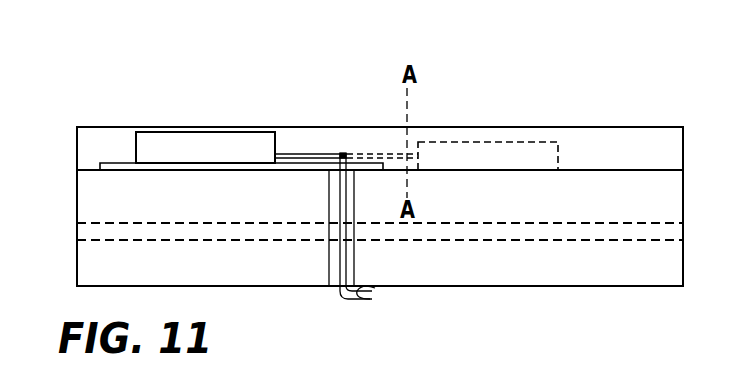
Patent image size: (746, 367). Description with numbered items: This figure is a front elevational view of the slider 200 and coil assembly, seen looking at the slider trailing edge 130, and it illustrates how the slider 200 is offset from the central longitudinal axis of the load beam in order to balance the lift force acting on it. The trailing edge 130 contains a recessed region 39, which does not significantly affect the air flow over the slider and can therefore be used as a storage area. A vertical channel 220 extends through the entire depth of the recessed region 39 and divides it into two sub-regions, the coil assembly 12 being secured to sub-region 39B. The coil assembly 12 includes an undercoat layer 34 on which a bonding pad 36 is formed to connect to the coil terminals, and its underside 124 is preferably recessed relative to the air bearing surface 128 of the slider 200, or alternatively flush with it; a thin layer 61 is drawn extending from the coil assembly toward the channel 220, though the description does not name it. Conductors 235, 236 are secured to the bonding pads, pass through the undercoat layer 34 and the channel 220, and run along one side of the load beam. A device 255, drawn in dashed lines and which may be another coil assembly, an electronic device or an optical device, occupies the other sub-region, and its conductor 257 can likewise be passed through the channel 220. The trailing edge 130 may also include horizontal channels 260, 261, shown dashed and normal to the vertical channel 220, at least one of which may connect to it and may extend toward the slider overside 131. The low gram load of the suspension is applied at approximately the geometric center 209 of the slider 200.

The slider 200 is at (352, 31).
The sub-region 39B is at (110, 128).
The coil assembly 12 is at (177, 112).
The underside of the coil assembly 124 is at (233, 131).
The undercoat layer 34 is at (120, 163).
The recessed region 39 is at (90, 168).
The lead 61 is at (301, 154).
The bonding pad 36 is at (341, 154).
The conductor 257 is at (403, 154).
The geometric center 209 is at (380, 126).
The device 255 is at (468, 142).
The air bearing surface 128 is at (542, 142).
The slider trailing edge 130 is at (643, 154).
The horizontal channel 260 is at (253, 222).
The horizontal channel 261 is at (622, 229).
The slider overside 131 is at (543, 286).
The vertical channel 220 is at (329, 287).
The conductor 235 is at (358, 296).
The conductor 236 is at (428, 309).